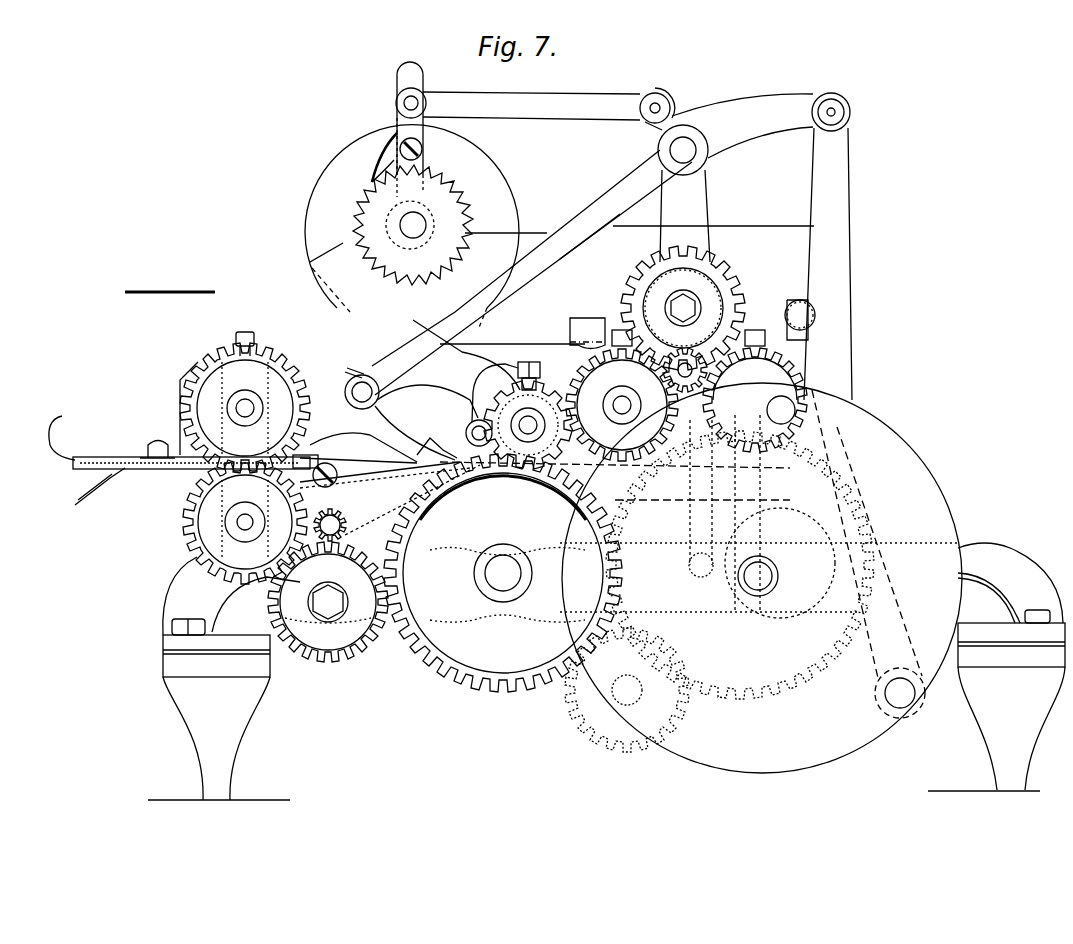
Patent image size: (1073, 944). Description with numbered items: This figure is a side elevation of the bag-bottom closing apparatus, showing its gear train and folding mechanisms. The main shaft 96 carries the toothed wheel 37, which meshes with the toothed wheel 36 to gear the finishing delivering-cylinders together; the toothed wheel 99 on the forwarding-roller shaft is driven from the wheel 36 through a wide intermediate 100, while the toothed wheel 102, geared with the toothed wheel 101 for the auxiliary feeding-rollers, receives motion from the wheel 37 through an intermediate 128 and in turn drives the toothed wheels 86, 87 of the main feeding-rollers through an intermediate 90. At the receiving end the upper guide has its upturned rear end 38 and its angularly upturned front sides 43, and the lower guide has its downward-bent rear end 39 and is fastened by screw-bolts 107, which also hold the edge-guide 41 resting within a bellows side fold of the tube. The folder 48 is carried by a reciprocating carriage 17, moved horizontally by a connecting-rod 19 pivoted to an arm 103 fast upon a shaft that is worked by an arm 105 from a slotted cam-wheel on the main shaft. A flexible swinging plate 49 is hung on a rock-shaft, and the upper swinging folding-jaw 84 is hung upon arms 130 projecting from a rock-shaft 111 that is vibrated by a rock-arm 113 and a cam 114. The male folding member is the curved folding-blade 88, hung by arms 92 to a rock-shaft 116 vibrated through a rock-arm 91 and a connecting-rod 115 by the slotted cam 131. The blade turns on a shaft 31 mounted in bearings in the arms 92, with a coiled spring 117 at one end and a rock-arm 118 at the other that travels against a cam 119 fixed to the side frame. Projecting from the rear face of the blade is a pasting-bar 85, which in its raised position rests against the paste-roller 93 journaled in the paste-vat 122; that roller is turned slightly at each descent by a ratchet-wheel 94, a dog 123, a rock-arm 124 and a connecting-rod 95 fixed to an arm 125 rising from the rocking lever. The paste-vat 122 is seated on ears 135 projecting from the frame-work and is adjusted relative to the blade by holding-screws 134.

The reciprocating carriage 17 is at (305, 454).
The connecting-rod 19 is at (385, 475).
The shaft 31 is at (362, 392).
The toothed wheel 36 is at (755, 391).
The toothed wheel 37 is at (740, 565).
The upturned rear end of upper guide 38 is at (64, 438).
The downward-bent rear end of lower guide 39 is at (100, 486).
The edge-guide 41 is at (191, 463).
The upturned angular front sides of upper guide 43 is at (363, 447).
The folder 48 is at (358, 455).
The flexible swinging plate 49 is at (412, 500).
The upper swinging folding-jaw 84 is at (479, 437).
The pasting-bar 85 is at (437, 448).
The toothed wheel 86 is at (245, 402).
The toothed wheel 87 is at (245, 522).
The curved folding-blade 88 is at (415, 433).
The intermediate 90 is at (328, 602).
The rock-arm 91 is at (761, 125).
The arm 92 is at (532, 272).
The paste-roller 93 is at (412, 227).
The ratchet-wheel 94 is at (413, 225).
The connecting-rod 95 is at (518, 129).
The main shaft 96 is at (758, 576).
The toothed wheel 99 is at (622, 395).
The wide intermediate 100 is at (683, 308).
The toothed wheel 101 is at (528, 425).
The toothed wheel 102 is at (503, 573).
The arm 103 is at (846, 554).
The arm 105 is at (330, 525).
The screw-bolt 107 is at (157, 441).
The rock-shaft 111 is at (685, 370).
The rock-arm 113 is at (724, 512).
The cam 114 is at (780, 563).
The connecting-rod 115 is at (828, 264).
The rock-shaft 116 is at (684, 193).
The spring 117 is at (372, 374).
The rock-arm 118 is at (427, 399).
The cam 119 is at (466, 355).
The paste-vat 122 is at (594, 236).
The dog 123 is at (366, 162).
The rock-arm 124 is at (411, 143).
The arm 125 is at (651, 118).
The intermediate 128 is at (627, 700).
The arm 130 is at (517, 392).
The slotted cam 131 is at (762, 578).
The holding-screw 134 is at (800, 315).
The ear 135 is at (689, 324).